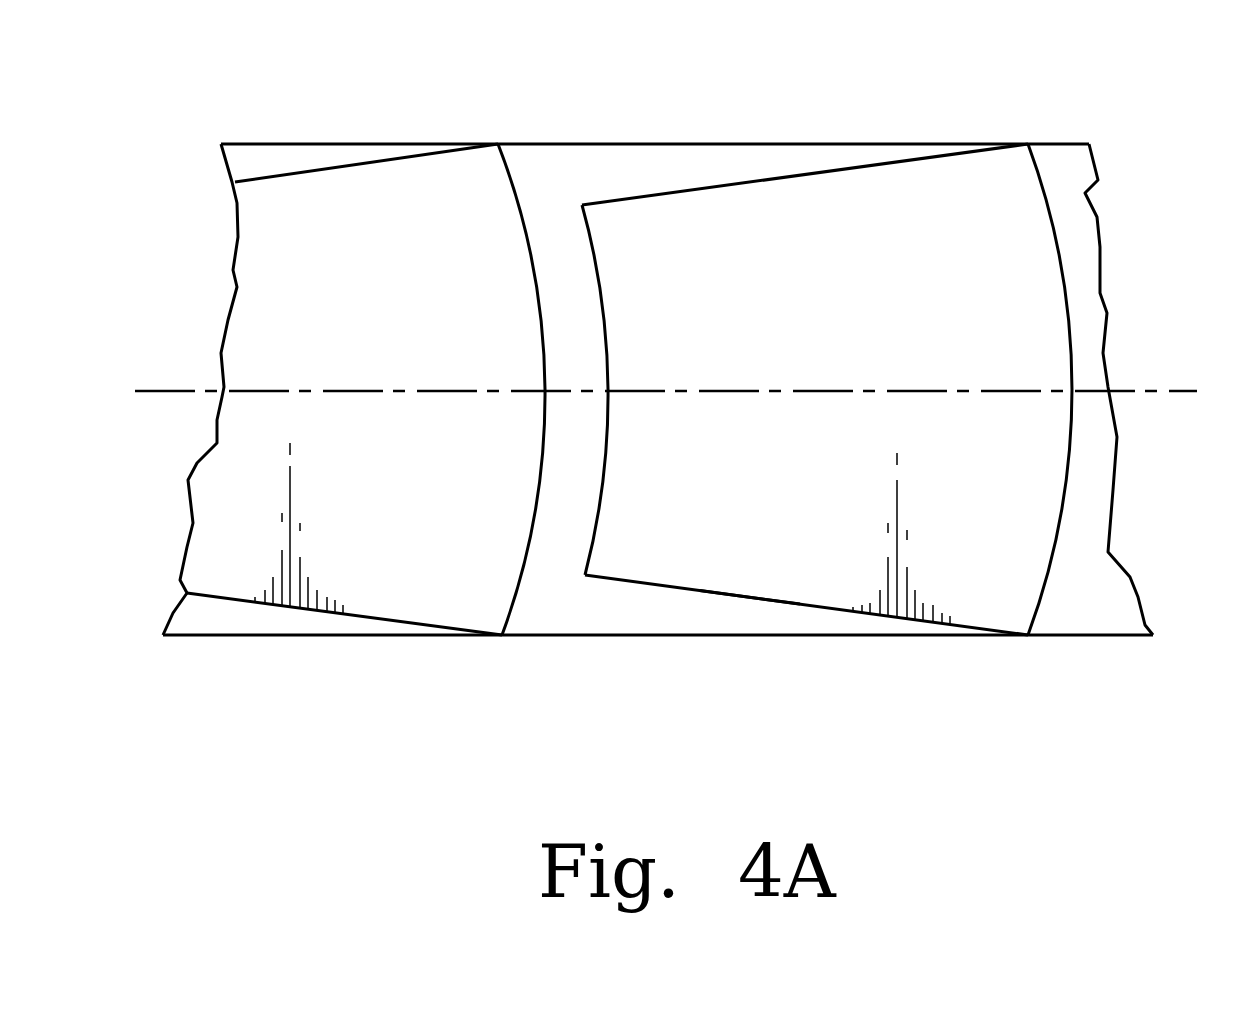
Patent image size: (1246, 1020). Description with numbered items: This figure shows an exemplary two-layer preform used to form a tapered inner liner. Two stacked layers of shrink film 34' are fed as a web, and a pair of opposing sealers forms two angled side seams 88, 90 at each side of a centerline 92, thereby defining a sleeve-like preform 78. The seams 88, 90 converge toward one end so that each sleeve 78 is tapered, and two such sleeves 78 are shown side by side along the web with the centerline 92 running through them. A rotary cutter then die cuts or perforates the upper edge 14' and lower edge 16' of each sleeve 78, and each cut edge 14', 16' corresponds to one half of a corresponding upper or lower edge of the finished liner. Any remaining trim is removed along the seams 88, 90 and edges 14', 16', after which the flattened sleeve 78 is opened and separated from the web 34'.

The shrink film 34' is at (658, 331).
The sleeve-like preform 78 is at (410, 345).
The angled side seam 88 is at (770, 178).
The angled side seam 90 is at (750, 597).
The centerline 92 is at (1162, 391).
The upper edge 14' is at (1109, 389).
The lower edge 16' is at (545, 389).